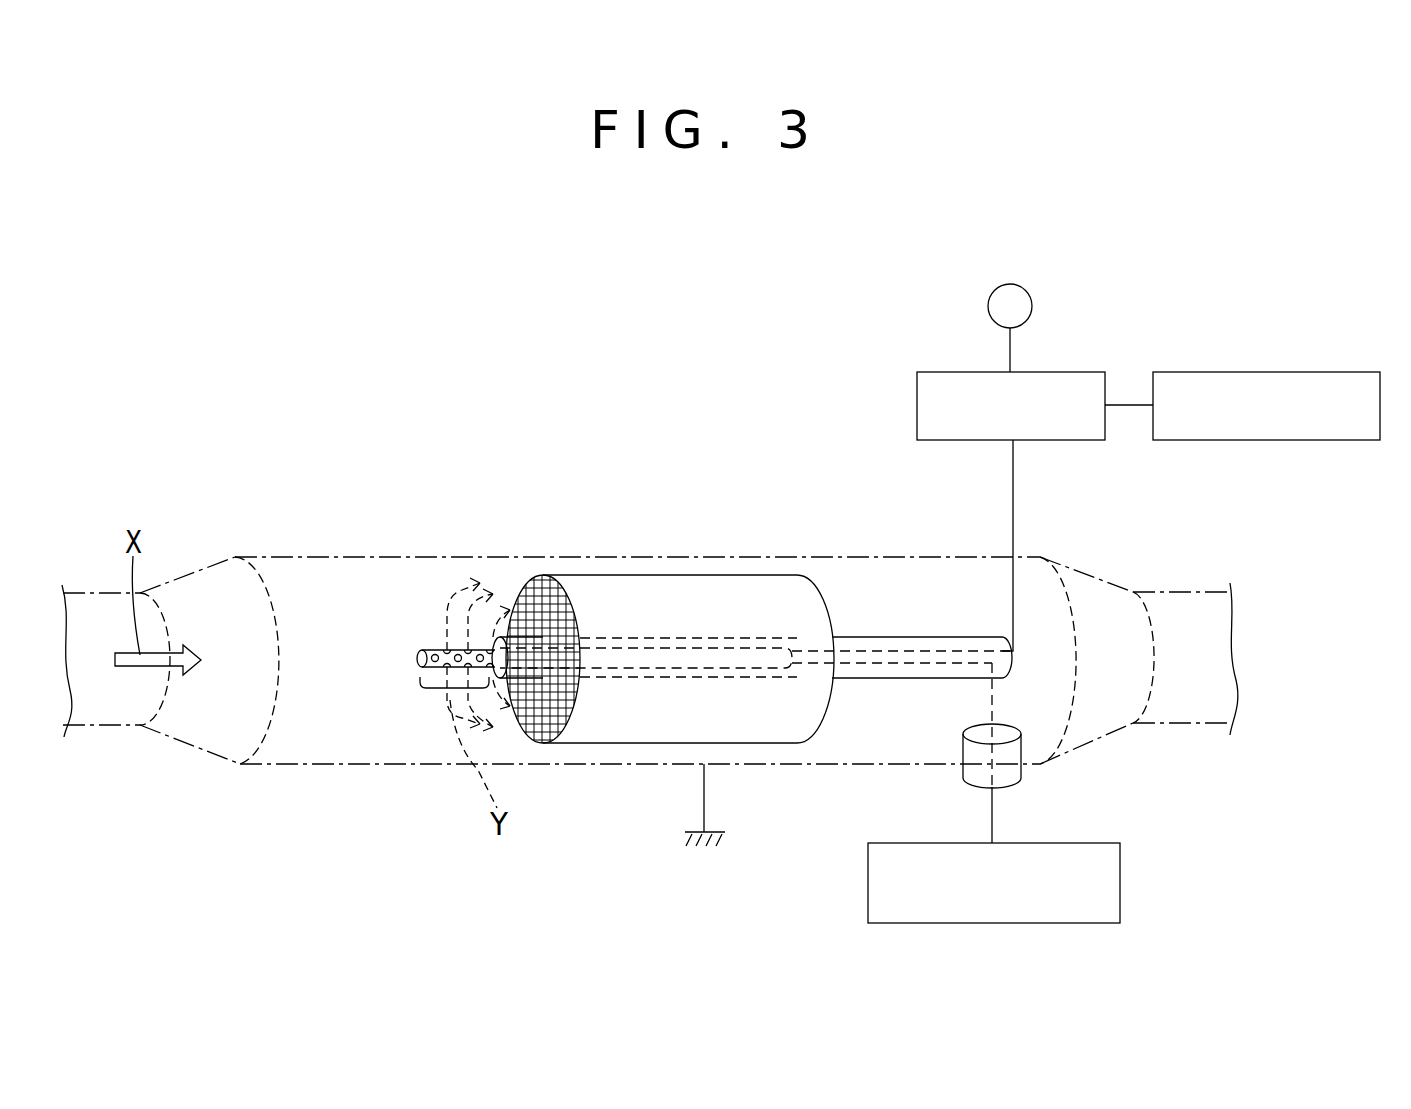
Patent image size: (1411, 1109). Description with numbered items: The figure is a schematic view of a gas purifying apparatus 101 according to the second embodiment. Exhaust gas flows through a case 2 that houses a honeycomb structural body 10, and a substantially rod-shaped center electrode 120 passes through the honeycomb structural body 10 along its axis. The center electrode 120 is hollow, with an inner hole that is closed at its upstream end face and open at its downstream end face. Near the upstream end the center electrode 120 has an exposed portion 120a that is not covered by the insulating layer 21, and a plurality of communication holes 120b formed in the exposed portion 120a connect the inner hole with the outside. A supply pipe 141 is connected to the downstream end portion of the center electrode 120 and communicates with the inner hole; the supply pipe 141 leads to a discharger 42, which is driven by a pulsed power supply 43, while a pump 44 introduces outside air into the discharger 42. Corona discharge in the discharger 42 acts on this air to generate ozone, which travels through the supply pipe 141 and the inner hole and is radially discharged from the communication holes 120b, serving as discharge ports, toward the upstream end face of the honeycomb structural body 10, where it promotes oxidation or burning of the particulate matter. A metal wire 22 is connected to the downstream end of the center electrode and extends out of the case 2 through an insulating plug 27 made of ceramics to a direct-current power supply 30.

The case 2 is at (910, 555).
The honeycomb structural body 10 is at (585, 590).
The insulating layer 21 is at (865, 637).
The metal wire 22 is at (990, 703).
The insulating plug 27 is at (1010, 773).
The direct-current power supply 30 is at (1120, 877).
The discharger 42 is at (1057, 372).
The pulsed power supply 43 is at (1258, 372).
The pump 44 is at (1028, 292).
The gas purifying apparatus 101 is at (717, 500).
The center electrode 120 is at (422, 655).
The exposed portion 120a is at (460, 688).
The communication holes 120b is at (430, 650).
The supply pipe 141 is at (1013, 494).